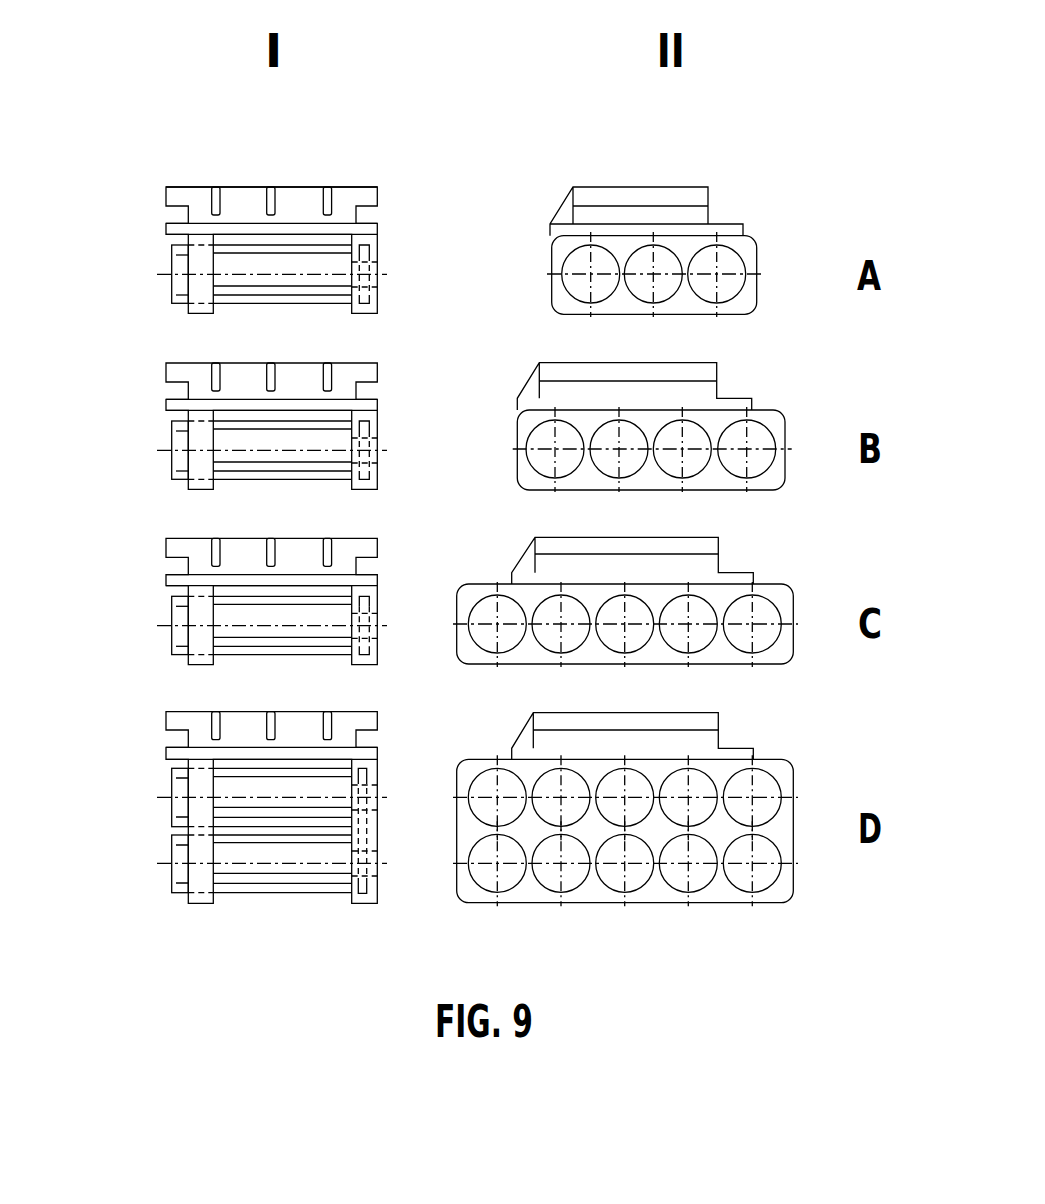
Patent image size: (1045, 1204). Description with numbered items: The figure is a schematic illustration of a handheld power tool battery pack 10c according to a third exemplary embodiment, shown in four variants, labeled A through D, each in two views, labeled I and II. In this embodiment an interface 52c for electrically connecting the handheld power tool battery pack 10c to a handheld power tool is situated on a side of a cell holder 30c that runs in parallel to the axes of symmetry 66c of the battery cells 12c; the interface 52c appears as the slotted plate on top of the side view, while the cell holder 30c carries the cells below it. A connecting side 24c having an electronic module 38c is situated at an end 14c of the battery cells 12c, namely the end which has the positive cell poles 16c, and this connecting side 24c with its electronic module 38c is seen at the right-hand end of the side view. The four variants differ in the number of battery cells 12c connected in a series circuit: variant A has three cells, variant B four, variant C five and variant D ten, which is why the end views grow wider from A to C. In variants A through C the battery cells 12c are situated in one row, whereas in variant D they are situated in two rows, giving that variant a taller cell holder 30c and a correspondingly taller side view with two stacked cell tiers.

The handheld power tool battery pack 10c is at (167, 162).
The battery cells 12c is at (228, 290).
The end of battery cells 14c is at (352, 262).
The positive cell poles 16c is at (432, 270).
The connecting side 24c is at (365, 293).
The cell holder 30c is at (253, 303).
The electronic module 38c is at (365, 252).
The interface 52c is at (295, 202).
The axes of symmetry 66c is at (172, 273).